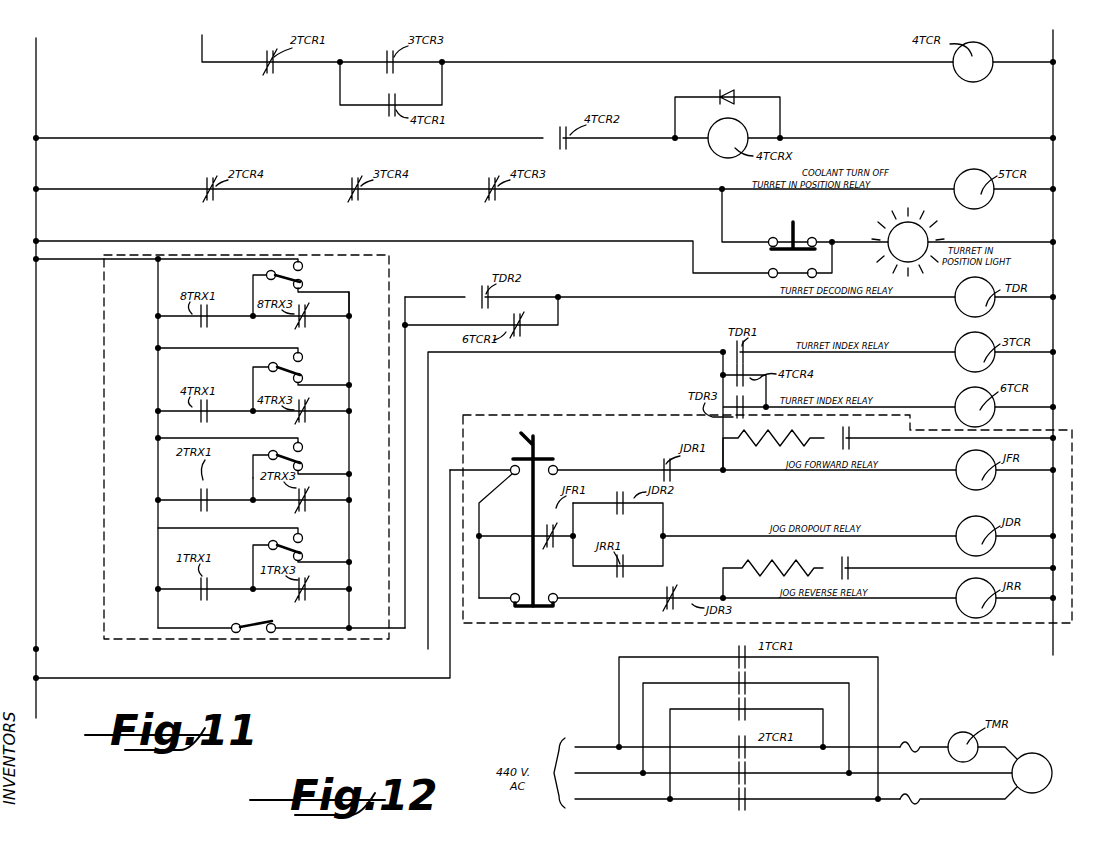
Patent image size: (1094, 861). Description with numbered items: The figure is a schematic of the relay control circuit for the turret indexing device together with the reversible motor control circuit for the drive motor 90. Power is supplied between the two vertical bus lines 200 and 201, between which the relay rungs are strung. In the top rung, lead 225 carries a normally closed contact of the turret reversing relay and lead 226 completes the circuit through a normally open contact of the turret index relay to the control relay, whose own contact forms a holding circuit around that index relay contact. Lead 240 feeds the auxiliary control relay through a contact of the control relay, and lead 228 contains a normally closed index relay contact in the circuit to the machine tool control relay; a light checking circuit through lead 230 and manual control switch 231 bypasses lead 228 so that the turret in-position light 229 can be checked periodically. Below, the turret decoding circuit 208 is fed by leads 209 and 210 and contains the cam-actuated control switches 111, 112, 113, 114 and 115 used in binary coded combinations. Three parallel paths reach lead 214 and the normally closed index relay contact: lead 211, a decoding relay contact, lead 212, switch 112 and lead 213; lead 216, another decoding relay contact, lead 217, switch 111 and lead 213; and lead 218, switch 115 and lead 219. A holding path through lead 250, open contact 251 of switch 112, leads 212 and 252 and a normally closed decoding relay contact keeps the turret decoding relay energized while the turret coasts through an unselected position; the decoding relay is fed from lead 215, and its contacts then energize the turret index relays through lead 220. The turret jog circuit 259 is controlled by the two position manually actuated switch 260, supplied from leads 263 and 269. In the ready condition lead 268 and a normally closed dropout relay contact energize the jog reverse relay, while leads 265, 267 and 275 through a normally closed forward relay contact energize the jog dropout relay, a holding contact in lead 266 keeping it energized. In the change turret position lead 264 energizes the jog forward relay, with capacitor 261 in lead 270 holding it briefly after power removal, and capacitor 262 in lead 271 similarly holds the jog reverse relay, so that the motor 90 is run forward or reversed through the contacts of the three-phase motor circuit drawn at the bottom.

In FIG. 11, the left supply bus line 200 is at (56, 712).
In FIG. 11, the right supply bus line 201 is at (1045, 667).
In FIG. 11, the lead 225 is at (202, 48).
In FIG. 11, the lead 226 is at (612, 62).
In FIG. 11, the lead 240 is at (193, 138).
In FIG. 11, the lead 228 is at (95, 189).
In FIG. 11, the lead 230 is at (622, 241).
In FIG. 11, the manual control switch 231 is at (797, 240).
In FIG. 11, the turret in-position light 229 is at (916, 242).
In FIG. 11, the lead 209 is at (56, 262).
In FIG. 11, the turret decoding circuit 208 is at (104, 432).
In FIG. 11, the lead 210 is at (158, 392).
In FIG. 11, the lead 213 is at (349, 484).
In FIG. 11, the lead 214 is at (405, 370).
In FIG. 11, the control line 215 is at (632, 297).
In FIG. 11, the lead 220 is at (558, 352).
In FIG. 11, the control switch 114 is at (303, 270).
In FIG. 11, the control switch 113 is at (303, 360).
In FIG. 11, the control switch 112 is at (303, 452).
In FIG. 11, the control switch 111 is at (303, 542).
In FIG. 11, the control switch 115 is at (272, 612).
In FIG. 11, the lead 250 is at (208, 438).
In FIG. 11, the open contact of switch 112 251 is at (300, 442).
In FIG. 11, the lead 252 is at (286, 506).
In FIG. 11, the lead 211 is at (198, 482).
In FIG. 11, the lead 212 is at (253, 478).
In FIG. 11, the lead 216 is at (182, 589).
In FIG. 11, the lead 217 is at (254, 552).
In FIG. 11, the lead 218 is at (175, 628).
In FIG. 11, the lead 219 is at (300, 628).
In FIG. 11, the turret jog circuit 259 is at (623, 415).
In FIG. 11, the two position manually actuated switch 260 is at (540, 447).
In FIG. 11, the capacitor 261 is at (852, 434).
In FIG. 11, the capacitor 262 is at (852, 562).
In FIG. 11, the lead 263 is at (400, 680).
In FIG. 11, the lead 264 is at (622, 460).
In FIG. 11, the lead 265 is at (511, 526).
In FIG. 11, the control line 266 is at (663, 512).
In FIG. 11, the lead 267 is at (663, 560).
In FIG. 11, the lead 268 is at (618, 590).
In FIG. 11, the lead 269 is at (485, 572).
In FIG. 11, the lead 270 is at (965, 440).
In FIG. 11, the lead 271 is at (1000, 568).
In FIG. 11, the lead 275 is at (745, 536).
In FIG. 12, the reversible drive motor 90 is at (1040, 770).